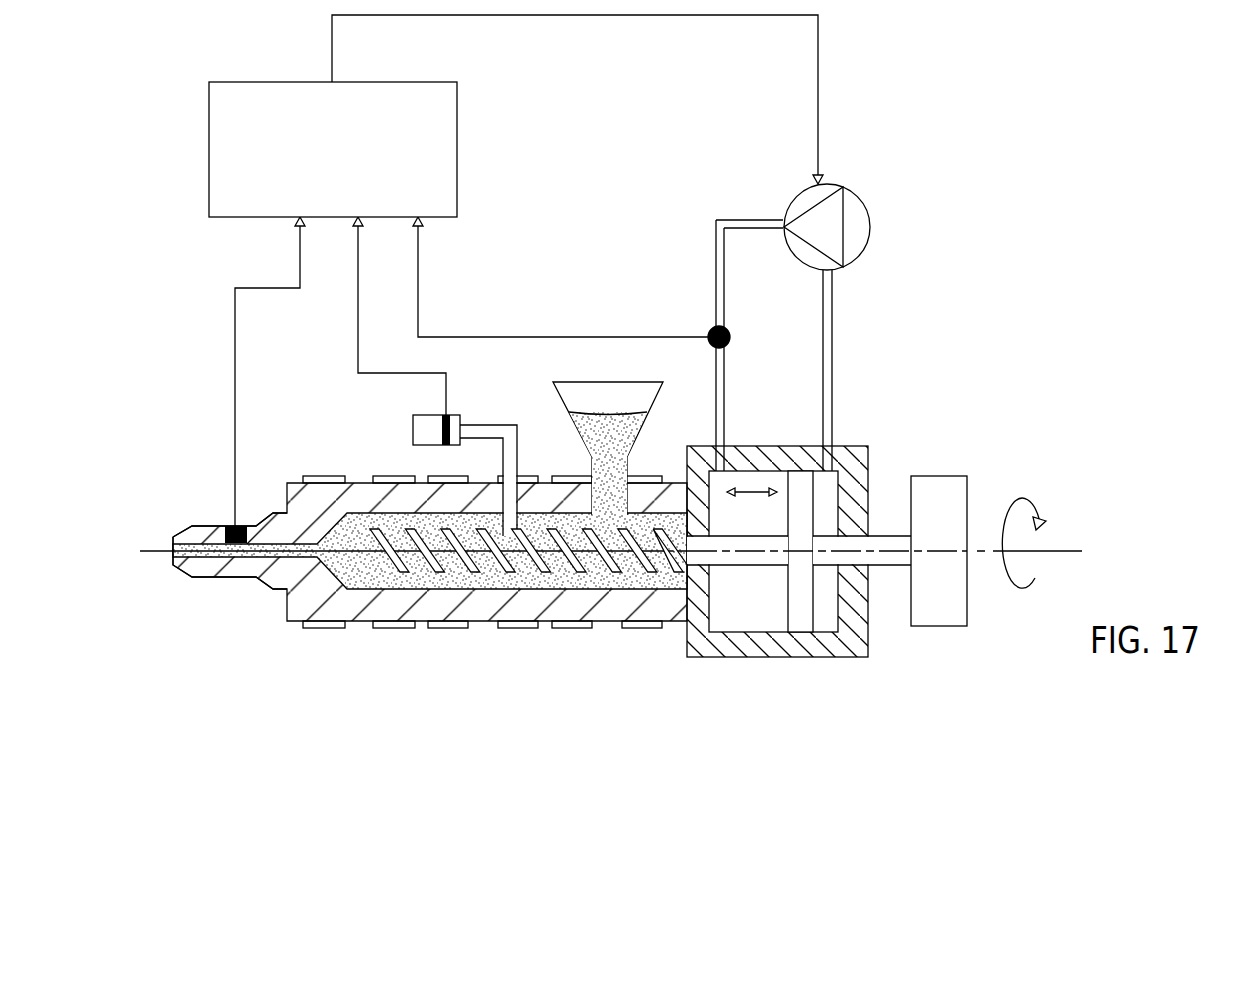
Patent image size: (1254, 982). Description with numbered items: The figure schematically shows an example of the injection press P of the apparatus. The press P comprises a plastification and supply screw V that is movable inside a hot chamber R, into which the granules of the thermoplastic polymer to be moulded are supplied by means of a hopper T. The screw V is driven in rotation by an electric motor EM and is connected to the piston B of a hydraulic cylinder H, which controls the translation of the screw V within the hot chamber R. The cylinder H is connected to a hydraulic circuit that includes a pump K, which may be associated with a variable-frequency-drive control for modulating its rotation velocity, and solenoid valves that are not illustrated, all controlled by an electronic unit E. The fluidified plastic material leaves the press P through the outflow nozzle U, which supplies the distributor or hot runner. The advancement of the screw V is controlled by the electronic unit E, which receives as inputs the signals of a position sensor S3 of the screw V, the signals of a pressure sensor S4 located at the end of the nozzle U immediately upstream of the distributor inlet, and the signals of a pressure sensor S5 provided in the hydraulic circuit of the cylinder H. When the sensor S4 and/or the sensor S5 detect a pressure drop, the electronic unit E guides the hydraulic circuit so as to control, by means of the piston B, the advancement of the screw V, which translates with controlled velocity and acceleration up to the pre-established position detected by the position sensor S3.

The electronic unit E is at (222, 145).
The pump K is at (858, 212).
The pressure sensor S5 is at (727, 344).
The hopper T is at (612, 381).
The position sensor S3 is at (443, 425).
The pressure sensor S4 is at (232, 525).
The outflow nozzle U is at (192, 578).
The hot chamber R is at (363, 572).
The injection press P is at (441, 652).
The plastification and supply screw V is at (563, 562).
The hydraulic cylinder H is at (789, 658).
The piston B is at (797, 593).
The electric motor EM is at (942, 617).